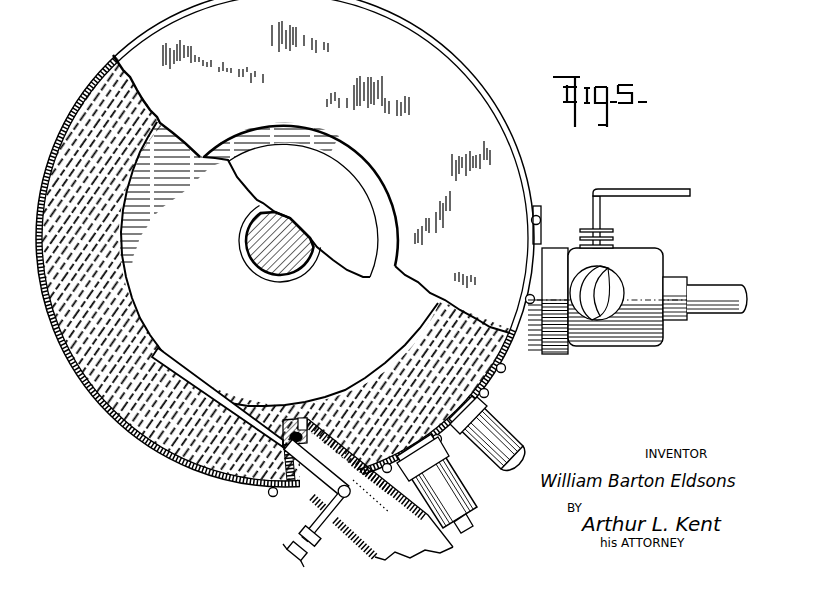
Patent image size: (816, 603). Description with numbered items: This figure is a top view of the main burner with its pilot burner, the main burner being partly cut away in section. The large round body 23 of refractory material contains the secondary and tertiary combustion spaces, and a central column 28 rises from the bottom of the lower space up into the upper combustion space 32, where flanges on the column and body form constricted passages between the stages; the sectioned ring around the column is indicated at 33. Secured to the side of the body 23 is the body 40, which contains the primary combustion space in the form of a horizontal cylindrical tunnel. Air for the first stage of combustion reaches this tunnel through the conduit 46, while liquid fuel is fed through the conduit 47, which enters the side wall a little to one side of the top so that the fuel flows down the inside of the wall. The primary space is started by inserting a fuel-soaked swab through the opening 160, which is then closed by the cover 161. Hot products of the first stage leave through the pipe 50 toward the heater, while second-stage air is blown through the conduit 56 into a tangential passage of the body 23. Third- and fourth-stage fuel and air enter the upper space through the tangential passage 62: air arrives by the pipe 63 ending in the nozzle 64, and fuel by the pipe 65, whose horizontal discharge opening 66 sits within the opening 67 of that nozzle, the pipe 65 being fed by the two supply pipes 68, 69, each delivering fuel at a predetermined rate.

The body 23 is at (127, 393).
The column 28 is at (250, 252).
The upper combustion space 32 is at (252, 418).
The inner ring 33 is at (134, 293).
The body 40 is at (640, 263).
The conduit 46 is at (720, 290).
The conduit 47 is at (650, 193).
The pipe 50 is at (513, 470).
The conduit 56 is at (457, 503).
The passage 62 is at (187, 470).
The pipe 63 is at (430, 550).
The nozzle 64 is at (303, 428).
The pipe 65 is at (330, 460).
The discharge opening 66 is at (293, 433).
The opening 67 is at (285, 437).
The supply pipe 68 is at (300, 532).
The supply pipe 69 is at (288, 552).
The opening 160 is at (615, 310).
The cover 161 is at (587, 308).